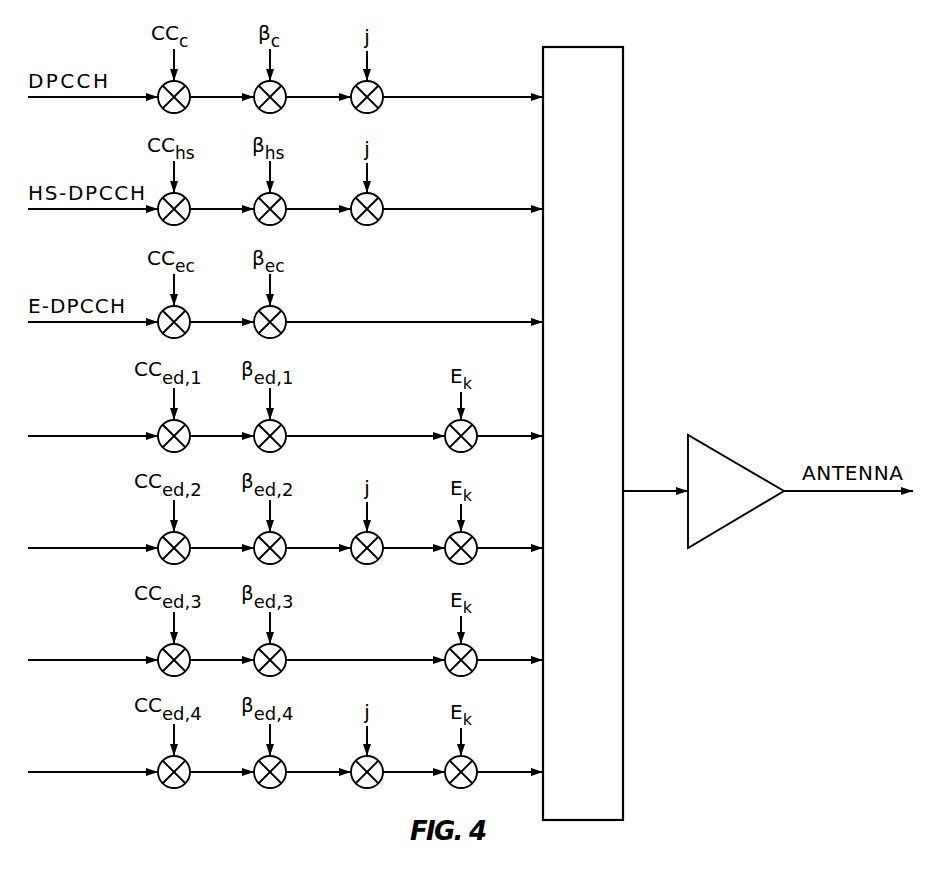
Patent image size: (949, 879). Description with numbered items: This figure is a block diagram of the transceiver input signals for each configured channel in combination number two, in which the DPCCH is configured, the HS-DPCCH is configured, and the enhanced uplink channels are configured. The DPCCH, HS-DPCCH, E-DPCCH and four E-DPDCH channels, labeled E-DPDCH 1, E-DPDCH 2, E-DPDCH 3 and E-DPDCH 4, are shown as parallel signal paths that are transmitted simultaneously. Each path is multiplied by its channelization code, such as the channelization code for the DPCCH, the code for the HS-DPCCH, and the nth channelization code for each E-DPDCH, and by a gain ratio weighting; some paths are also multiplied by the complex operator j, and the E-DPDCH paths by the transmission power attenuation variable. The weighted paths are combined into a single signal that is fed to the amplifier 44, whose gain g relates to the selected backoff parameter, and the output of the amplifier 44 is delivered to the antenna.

The amplifier 44 is at (725, 455).
The E-DPDCH channel 1 is at (93, 422).
The E-DPDCH channel 2 is at (93, 534).
The E-DPDCH channel 3 is at (93, 646).
The E-DPDCH channel 4 is at (93, 758).